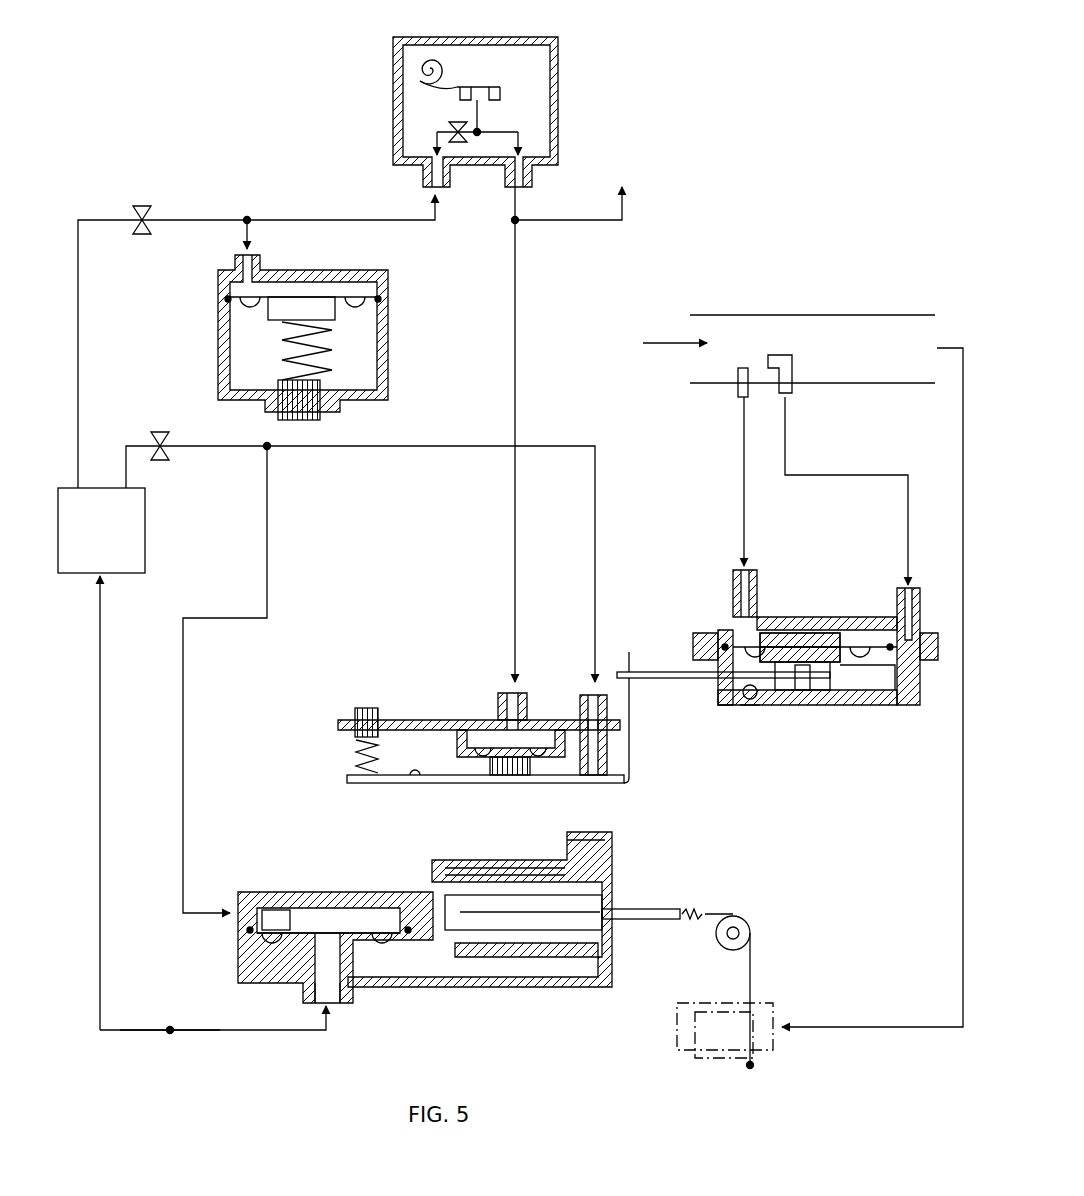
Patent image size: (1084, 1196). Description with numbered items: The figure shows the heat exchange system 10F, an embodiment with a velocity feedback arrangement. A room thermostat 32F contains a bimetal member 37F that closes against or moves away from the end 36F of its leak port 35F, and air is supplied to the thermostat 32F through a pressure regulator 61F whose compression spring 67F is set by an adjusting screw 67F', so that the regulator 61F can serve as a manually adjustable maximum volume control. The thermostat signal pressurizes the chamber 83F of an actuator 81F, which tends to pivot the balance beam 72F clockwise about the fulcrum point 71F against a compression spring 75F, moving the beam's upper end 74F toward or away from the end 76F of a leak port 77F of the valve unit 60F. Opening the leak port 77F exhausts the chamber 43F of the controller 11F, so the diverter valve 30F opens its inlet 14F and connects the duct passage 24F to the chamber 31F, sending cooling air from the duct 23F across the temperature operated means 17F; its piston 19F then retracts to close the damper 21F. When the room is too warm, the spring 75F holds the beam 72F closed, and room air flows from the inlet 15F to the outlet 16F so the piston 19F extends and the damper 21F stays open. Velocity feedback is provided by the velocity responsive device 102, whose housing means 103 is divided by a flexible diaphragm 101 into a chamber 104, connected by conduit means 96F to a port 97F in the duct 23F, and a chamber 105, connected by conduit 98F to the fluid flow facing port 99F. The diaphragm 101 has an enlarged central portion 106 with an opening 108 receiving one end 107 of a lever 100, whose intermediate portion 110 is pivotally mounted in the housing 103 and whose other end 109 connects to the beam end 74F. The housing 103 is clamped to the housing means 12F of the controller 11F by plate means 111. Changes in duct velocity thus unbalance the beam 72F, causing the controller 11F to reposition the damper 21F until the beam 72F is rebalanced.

The heat exchange system 10F is at (702, 232).
The thermostat 32F is at (575, 78).
The end of leak port 36F is at (486, 86).
The bimetal member 37F is at (450, 90).
The leak port 35F is at (497, 95).
The pressure regulator 61F is at (398, 322).
The compression spring 67F is at (242, 351).
The adjusting screw 67F' is at (342, 410).
The duct 23F is at (845, 315).
The damper 21F is at (708, 1060).
The port 97F is at (738, 370).
The fluid flow facing port 99F is at (768, 358).
The conduit means 96F is at (744, 482).
The conduit 98F is at (848, 475).
The lever 100 is at (668, 672).
The flexible diaphragm 101 is at (735, 620).
The velocity responsive device 102 is at (850, 600).
The housing means 103 is at (830, 617).
The chamber 104 is at (820, 633).
The enlarged central portion 106 is at (810, 645).
The chamber 105 is at (845, 688).
The end of lever 107 is at (805, 688).
The opening 108 is at (795, 690).
The intermediate portion of lever 110 is at (745, 695).
The plate means 111 is at (755, 720).
The upper end of balance beam 74F is at (630, 680).
The other end of lever 109 is at (622, 660).
The valve assembly 60F is at (482, 690).
The actuator 81F is at (532, 745).
The chamber 83F is at (490, 735).
The balance beam 72F is at (535, 783).
The leak port 77F is at (580, 760).
The fulcrum point 71F is at (416, 783).
The compression spring 75F is at (356, 758).
The end of leak port 76F is at (615, 783).
The controller 11F is at (625, 855).
The housing means 12F is at (355, 892).
The diverter valve 30F is at (314, 902).
The chamber 43F is at (290, 905).
The chamber 31F is at (510, 880).
The inlet 15F is at (612, 840).
The outlet 16F is at (598, 978).
The temperature operated means 17F is at (572, 898).
The piston 19F is at (668, 906).
The inlet 14F is at (345, 1003).
The duct passage 24F is at (170, 1032).